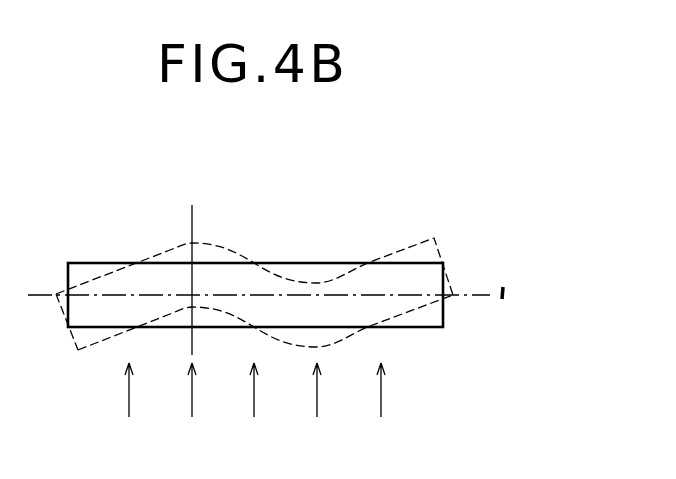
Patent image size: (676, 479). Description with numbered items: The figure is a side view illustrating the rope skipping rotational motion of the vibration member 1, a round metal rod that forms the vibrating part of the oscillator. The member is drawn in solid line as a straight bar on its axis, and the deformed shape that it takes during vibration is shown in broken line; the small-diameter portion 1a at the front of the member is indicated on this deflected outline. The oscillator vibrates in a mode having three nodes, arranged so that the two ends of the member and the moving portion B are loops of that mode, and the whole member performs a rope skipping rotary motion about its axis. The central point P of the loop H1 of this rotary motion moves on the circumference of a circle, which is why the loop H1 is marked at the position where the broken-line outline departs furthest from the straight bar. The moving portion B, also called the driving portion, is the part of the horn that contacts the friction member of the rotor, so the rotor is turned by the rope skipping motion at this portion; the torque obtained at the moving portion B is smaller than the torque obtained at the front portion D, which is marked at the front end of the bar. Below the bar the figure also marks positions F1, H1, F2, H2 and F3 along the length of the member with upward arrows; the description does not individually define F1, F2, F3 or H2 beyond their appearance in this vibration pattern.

The vibration member 1 is at (424, 316).
The small-diameter portion 1a is at (229, 251).
The front portion D is at (68, 263).
The central point P is at (187, 279).
The moving portion B is at (193, 243).
The first force position F1 is at (128, 408).
The loop H1 is at (193, 329).
The second force position F2 is at (253, 408).
The second hammer position H2 is at (318, 408).
The third force position F3 is at (382, 408).